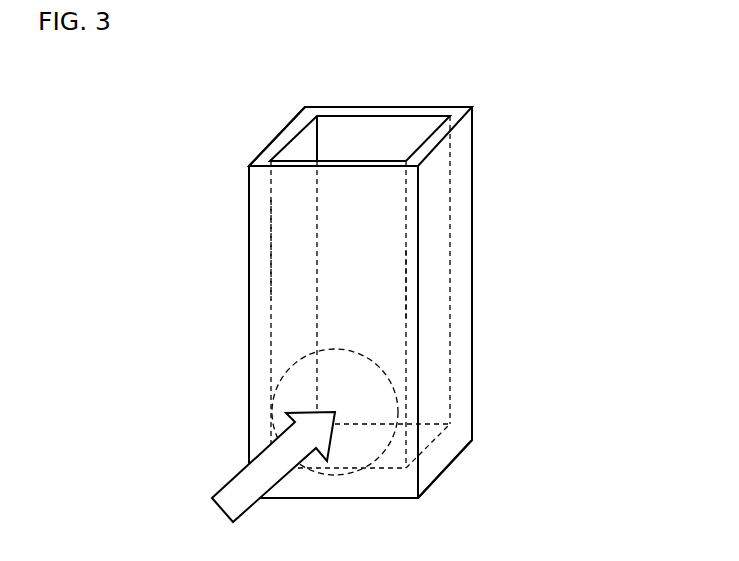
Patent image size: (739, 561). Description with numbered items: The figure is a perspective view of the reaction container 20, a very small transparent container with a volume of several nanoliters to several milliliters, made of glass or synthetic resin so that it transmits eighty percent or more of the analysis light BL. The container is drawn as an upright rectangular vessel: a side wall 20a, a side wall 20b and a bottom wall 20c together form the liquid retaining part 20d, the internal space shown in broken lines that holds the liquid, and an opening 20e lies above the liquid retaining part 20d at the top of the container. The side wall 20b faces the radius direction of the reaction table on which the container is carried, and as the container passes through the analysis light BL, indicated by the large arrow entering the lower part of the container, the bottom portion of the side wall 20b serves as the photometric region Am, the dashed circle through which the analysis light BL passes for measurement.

The reaction container 20 is at (390, 99).
The side wall 20a is at (288, 132).
The side wall 20b is at (293, 244).
The bottom wall 20c is at (440, 458).
The liquid retaining part 20d is at (375, 288).
The opening 20e is at (383, 140).
The photometric region Am is at (383, 450).
The analysis light BL is at (231, 480).